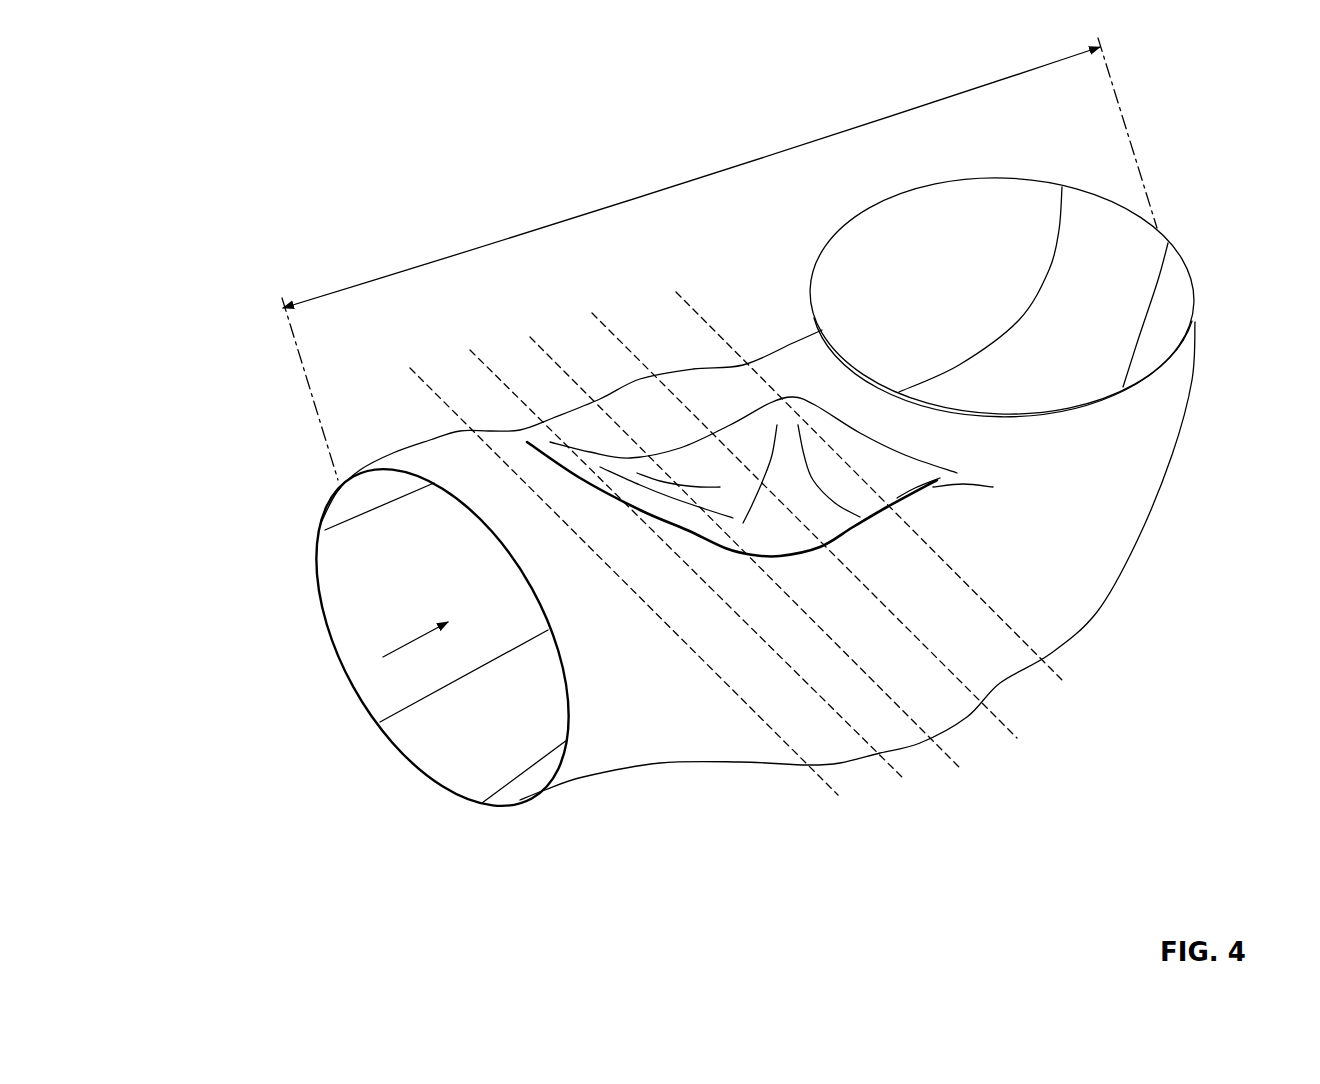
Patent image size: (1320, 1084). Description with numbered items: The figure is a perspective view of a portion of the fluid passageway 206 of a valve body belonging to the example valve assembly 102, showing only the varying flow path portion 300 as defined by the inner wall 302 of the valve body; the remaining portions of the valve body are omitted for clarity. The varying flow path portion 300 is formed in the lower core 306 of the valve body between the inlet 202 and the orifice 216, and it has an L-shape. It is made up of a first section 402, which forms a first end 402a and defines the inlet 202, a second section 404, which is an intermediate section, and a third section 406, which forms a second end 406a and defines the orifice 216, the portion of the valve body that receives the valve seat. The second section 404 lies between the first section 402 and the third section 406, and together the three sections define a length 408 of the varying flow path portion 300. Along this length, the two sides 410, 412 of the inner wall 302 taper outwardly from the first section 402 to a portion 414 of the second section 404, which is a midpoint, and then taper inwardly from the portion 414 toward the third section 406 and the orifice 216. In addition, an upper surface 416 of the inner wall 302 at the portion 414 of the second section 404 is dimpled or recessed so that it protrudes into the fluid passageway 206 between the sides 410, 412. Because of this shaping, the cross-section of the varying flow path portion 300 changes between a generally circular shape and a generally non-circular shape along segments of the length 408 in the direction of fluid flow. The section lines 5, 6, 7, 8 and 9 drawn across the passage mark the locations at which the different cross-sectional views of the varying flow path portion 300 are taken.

The engine air intake system 102 is at (242, 74).
The varying flow path portion 300 is at (652, 100).
The length 408 is at (710, 175).
The orifice 216 is at (902, 205).
The second end 406a is at (820, 258).
The side of the inner wall 412 is at (693, 369).
The third section 406 is at (1138, 424).
The side of the inner wall 410 is at (1034, 637).
The lower core 306 is at (397, 649).
The fluid passageway 206 is at (430, 569).
The first end 402a is at (407, 760).
The inlet 202 is at (507, 810).
The first section 402 is at (592, 783).
The inner wall 302 is at (620, 767).
The upper surface 416 is at (763, 532).
The second section 404 is at (864, 772).
The portion of the second section 414 is at (969, 710).
The section line 5- 5 is at (404, 364).
The section line 6- 6 is at (467, 346).
The section line 7- 7 is at (524, 332).
The section line 8- 8 is at (586, 310).
The section line 9- 9 is at (668, 288).